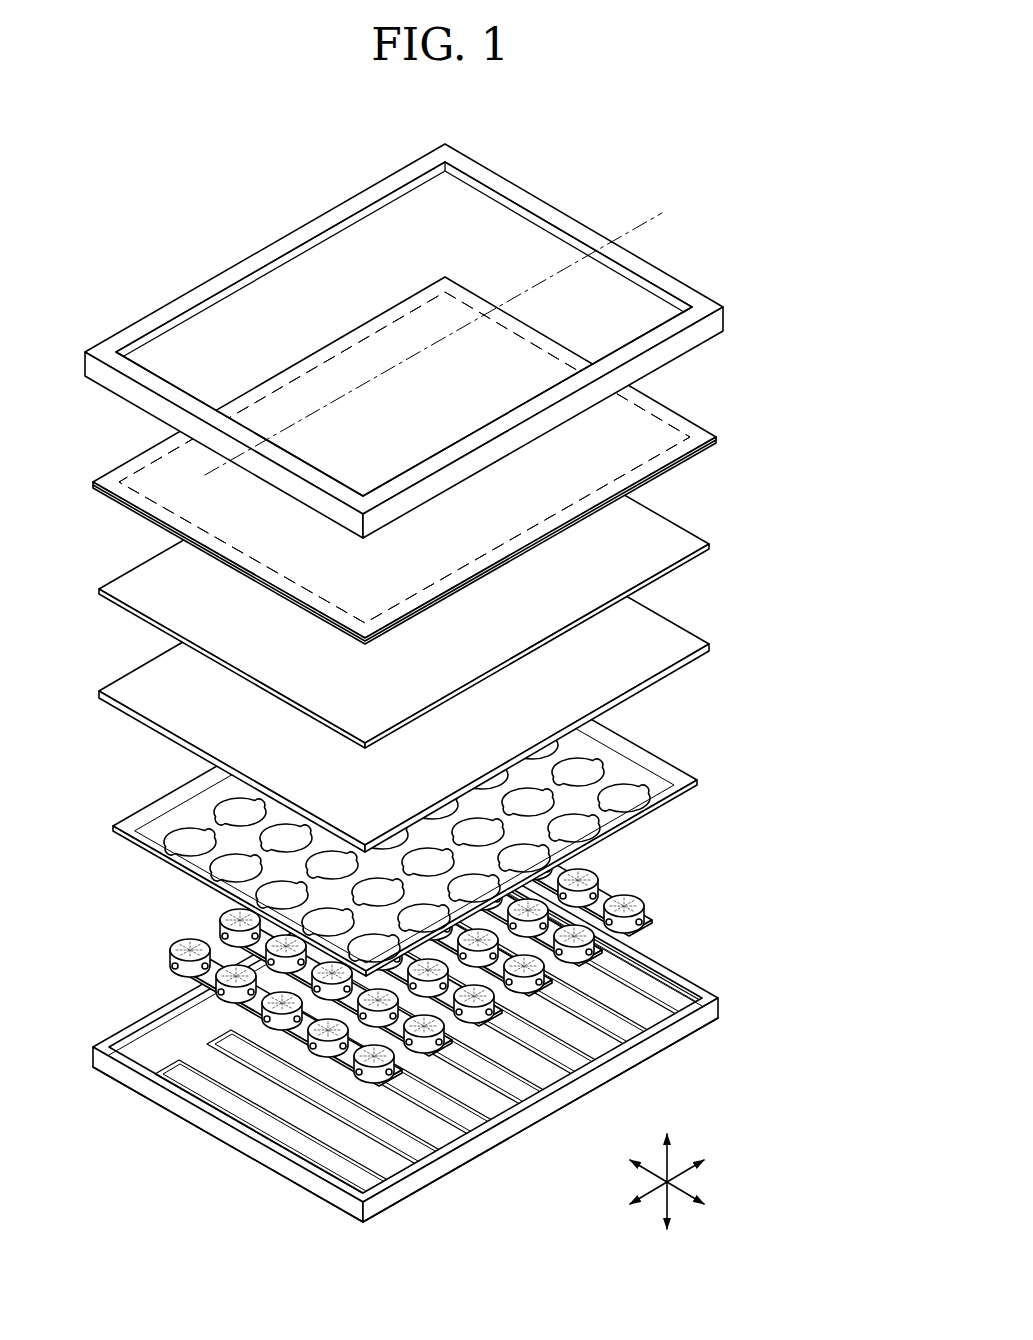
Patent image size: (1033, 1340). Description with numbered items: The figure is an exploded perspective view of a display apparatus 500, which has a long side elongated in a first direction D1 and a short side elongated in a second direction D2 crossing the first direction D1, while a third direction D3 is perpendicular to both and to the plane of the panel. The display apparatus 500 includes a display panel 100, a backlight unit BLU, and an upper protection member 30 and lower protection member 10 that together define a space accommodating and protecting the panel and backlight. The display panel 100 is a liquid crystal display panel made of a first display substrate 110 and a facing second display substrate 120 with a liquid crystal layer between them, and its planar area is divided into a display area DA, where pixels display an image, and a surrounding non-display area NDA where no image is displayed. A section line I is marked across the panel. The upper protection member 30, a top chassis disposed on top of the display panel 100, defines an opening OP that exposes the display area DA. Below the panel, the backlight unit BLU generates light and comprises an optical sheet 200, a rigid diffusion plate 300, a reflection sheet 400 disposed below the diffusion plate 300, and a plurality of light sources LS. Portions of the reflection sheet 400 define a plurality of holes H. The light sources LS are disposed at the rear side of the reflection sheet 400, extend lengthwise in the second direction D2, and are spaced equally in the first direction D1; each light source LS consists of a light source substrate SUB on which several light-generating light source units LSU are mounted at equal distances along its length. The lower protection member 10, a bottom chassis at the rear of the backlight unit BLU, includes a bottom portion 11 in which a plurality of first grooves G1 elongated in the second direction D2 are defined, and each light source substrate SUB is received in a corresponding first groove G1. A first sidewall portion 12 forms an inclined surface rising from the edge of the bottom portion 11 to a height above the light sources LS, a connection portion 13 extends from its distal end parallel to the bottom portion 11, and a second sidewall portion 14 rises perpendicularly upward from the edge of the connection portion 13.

The display apparatus 500 is at (453, 669).
The opening OP is at (476, 211).
The section line I-I' I is at (665, 216).
The upper protection member 30 is at (440, 327).
The display area DA is at (645, 428).
The non-display area NDA is at (671, 432).
The second display substrate 120 is at (718, 437).
The first display substrate 110 is at (702, 452).
The display panel 100 is at (477, 460).
The optical sheet 200 is at (445, 569).
The diffusion plate 300 is at (711, 645).
The reflection sheet 400 is at (445, 805).
The backlight unit BLU is at (448, 738).
The hole H is at (189, 836).
The light source LS is at (412, 937).
The light source unit LSU is at (151, 948).
The light source substrate SUB is at (182, 981).
The second sidewall portion 14 is at (673, 996).
The connection portion 13 is at (663, 1012).
The first sidewall portion 12 is at (665, 1012).
The bottom portion 11 is at (675, 1037).
The lower protection member 10 is at (466, 1032).
The first groove G1 is at (234, 1106).
The first direction D1 is at (683, 1176).
The second direction D2 is at (683, 1190).
The third direction D3 is at (667, 1167).